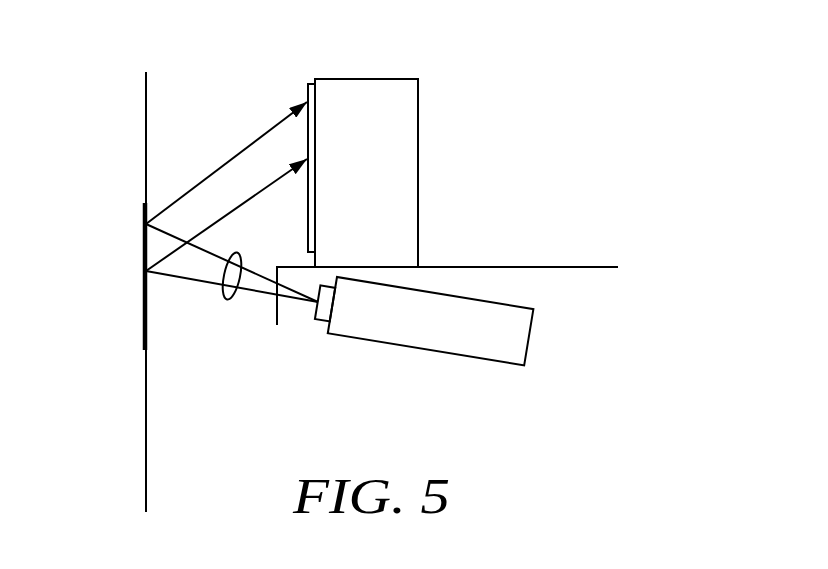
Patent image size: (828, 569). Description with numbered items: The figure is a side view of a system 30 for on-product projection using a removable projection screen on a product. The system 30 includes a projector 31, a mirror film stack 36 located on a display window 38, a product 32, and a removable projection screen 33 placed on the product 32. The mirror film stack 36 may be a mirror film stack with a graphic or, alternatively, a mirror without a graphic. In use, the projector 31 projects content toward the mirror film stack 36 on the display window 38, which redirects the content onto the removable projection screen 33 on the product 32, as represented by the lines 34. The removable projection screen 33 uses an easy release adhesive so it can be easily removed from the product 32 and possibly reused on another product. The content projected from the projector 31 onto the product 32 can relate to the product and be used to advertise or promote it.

The system 30 is at (632, 110).
The projector 31 is at (517, 336).
The product 32 is at (403, 170).
The removable projection screen 33 is at (310, 132).
The lines 34 is at (227, 300).
The mirror film stack 36 is at (142, 302).
The display window 38 is at (146, 443).